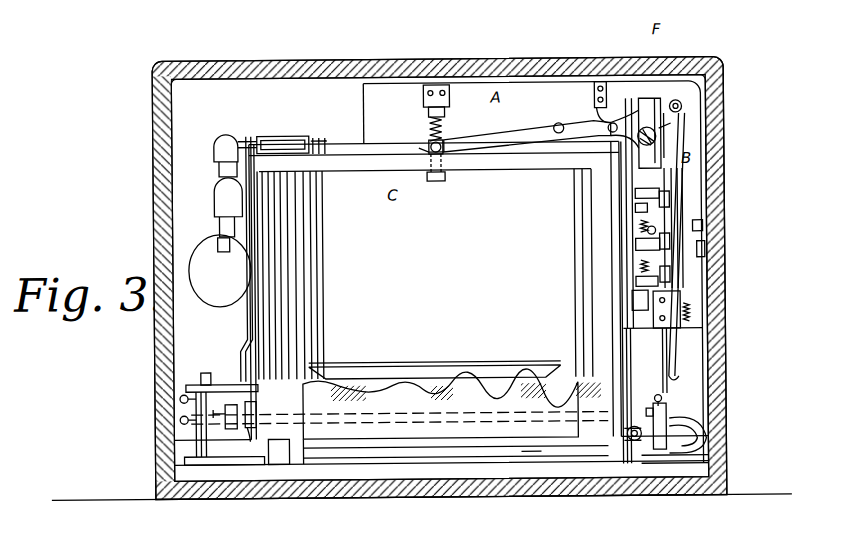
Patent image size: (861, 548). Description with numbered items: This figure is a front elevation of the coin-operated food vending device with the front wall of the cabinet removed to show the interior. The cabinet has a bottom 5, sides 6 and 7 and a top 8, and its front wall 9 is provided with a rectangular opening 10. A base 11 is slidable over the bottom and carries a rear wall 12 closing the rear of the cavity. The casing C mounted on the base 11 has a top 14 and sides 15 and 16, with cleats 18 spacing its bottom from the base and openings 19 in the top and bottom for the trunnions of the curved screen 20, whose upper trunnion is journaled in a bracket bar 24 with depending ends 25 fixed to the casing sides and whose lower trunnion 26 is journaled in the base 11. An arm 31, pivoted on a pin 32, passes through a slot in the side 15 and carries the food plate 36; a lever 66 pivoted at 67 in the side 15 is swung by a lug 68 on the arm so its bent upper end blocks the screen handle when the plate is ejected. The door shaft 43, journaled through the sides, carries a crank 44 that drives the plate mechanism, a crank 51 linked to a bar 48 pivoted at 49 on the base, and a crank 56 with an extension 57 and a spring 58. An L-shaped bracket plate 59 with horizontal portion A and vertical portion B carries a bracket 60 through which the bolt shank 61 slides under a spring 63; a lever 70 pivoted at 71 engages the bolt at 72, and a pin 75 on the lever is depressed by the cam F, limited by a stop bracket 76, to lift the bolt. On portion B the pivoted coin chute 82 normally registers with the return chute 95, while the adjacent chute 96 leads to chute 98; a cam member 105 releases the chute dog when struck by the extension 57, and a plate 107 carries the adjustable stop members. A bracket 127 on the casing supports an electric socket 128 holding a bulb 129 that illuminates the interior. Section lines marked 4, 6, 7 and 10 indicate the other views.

The section line 4- 4 is at (172, 58).
The bottom 5 is at (644, 40).
The side 6 is at (144, 79).
The side 7 is at (154, 355).
The top 8 is at (506, 76).
The front wall 9 is at (153, 186).
The opening 10 is at (468, 522).
The base 11 is at (392, 466).
The rear wall 12 is at (437, 221).
The top 14 is at (519, 165).
The side 15 is at (258, 270).
The side 16 is at (596, 247).
The cleats 18 is at (592, 458).
The openings 19 is at (277, 464).
The curved screen 20 is at (505, 309).
The bracket bar 24 is at (272, 134).
The depending ends 25 is at (257, 136).
The trunnion 26 is at (428, 470).
The arm 31 is at (233, 380).
The pin 32 is at (203, 384).
The plate 36 is at (400, 360).
The shaft 43 is at (644, 405).
The crank 44 is at (228, 430).
The bar 48 is at (372, 458).
The pivot 49 is at (530, 456).
The crank 51 is at (250, 440).
The crank 56 is at (662, 410).
The extension 57 is at (684, 470).
The spring 58 is at (624, 445).
The L-shaped bracket plate 59 is at (548, 92).
The bracket 60 is at (432, 92).
The shank 61 is at (440, 85).
The spring 63 is at (440, 132).
The lever 66 is at (296, 152).
The pivot 67 is at (216, 240).
The lug 68 is at (225, 259).
The lever 70 is at (519, 132).
The pivot 71 is at (561, 125).
The engagement point 72 is at (431, 146).
The pin 75 is at (642, 112).
The stop bracket 76 is at (600, 82).
The coin chute 82 is at (713, 180).
The return chute 95 is at (656, 336).
The chute 96 is at (698, 296).
The chute 98 is at (690, 370).
The cam member 105 is at (700, 400).
The plate 107 is at (640, 236).
The bracket 127 is at (204, 150).
The electric socket 128 is at (200, 185).
The electric bulb 129 is at (220, 271).